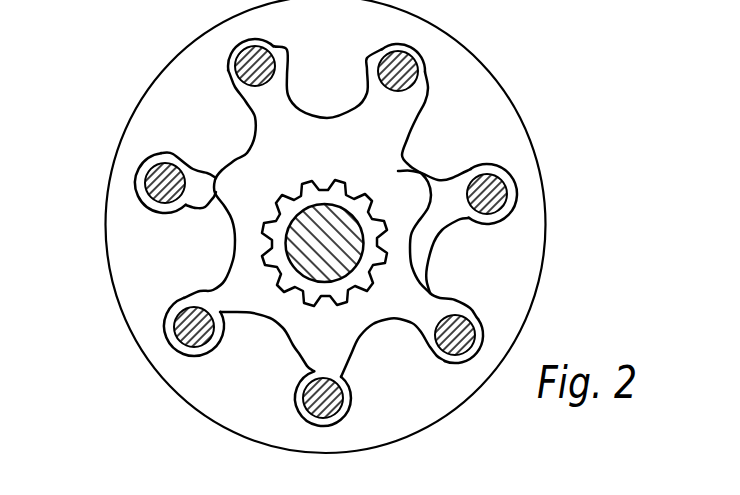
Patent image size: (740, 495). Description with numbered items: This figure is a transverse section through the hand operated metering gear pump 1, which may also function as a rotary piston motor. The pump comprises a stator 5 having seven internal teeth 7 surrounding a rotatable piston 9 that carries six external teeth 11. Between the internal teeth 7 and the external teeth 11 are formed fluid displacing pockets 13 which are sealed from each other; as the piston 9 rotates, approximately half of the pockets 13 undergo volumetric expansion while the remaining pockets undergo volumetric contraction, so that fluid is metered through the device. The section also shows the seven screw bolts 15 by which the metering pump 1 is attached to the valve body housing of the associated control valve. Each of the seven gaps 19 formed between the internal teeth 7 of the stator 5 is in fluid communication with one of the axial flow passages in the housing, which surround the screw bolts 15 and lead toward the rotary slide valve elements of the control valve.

The hand operated metering gear pump 1 is at (572, 128).
The stator 5 is at (130, 232).
The internal teeth 7 is at (320, 88).
The rotatable piston 9 is at (433, 243).
The external teeth 11 is at (234, 181).
The fluid displacing pockets 13 is at (378, 135).
The screw bolts 15 is at (398, 71).
The gaps 19 is at (460, 203).